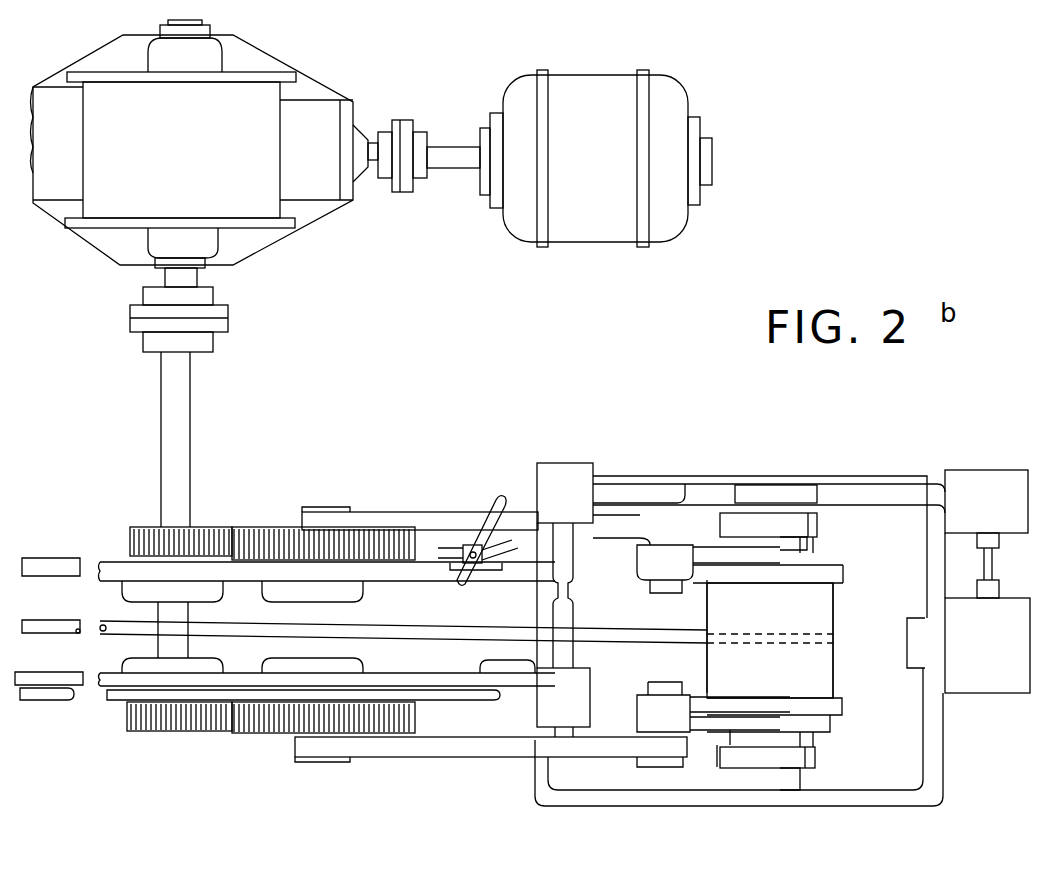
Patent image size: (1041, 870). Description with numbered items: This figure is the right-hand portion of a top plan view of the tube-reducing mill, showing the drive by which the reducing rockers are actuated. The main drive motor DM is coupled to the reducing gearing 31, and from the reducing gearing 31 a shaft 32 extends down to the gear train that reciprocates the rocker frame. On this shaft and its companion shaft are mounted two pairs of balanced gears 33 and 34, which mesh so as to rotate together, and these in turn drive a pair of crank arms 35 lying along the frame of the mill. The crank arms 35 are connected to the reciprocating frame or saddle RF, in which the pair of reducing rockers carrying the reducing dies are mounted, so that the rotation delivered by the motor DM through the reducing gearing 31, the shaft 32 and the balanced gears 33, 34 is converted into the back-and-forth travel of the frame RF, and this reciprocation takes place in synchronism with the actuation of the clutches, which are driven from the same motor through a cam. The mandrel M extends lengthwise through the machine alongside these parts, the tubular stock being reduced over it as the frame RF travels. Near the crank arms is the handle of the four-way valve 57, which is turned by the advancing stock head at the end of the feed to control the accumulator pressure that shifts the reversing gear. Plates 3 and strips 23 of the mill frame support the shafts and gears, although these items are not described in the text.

The reducing gearing 31 is at (256, 186).
The shaft 32 is at (192, 410).
The balanced gears 33 is at (147, 527).
The balanced gears 34 is at (248, 527).
The crank arms 35 is at (395, 512).
The four-way valve 57 is at (470, 545).
The plate 3 is at (43, 558).
The strip 23 is at (55, 700).
The mandrel M is at (57, 620).
The main drive motor DM is at (596, 158).
The reciprocating frame or saddle RF is at (852, 562).